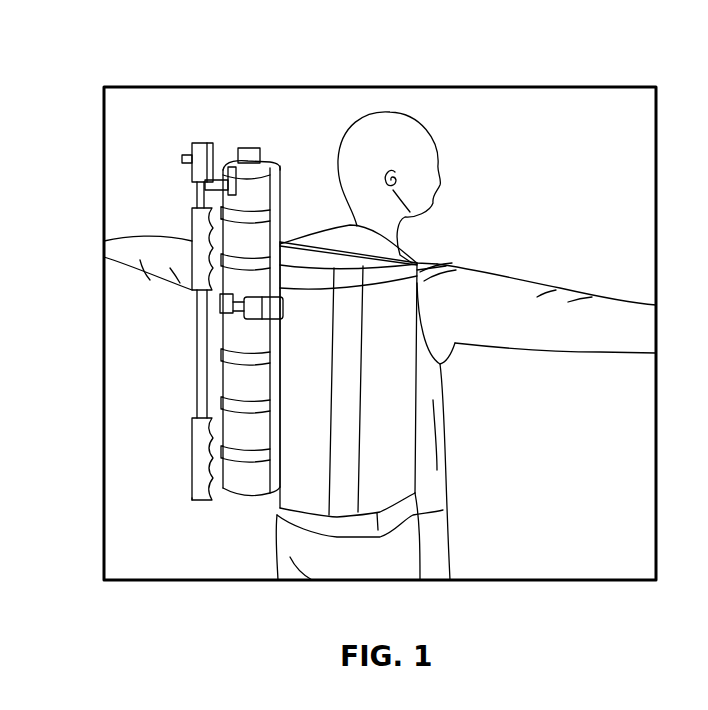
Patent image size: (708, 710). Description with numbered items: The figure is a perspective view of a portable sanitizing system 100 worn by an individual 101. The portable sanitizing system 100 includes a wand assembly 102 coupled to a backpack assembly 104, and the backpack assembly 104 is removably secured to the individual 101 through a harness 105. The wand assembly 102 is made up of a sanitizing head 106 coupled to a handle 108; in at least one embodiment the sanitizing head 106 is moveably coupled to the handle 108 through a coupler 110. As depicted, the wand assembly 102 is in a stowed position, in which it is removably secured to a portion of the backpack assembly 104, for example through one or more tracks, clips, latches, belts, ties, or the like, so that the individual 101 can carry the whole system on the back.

The portable sanitizing system 100 is at (145, 352).
The individual 101 is at (519, 264).
The wand assembly 102 is at (178, 418).
The backpack assembly 104 is at (395, 438).
The harness 105 is at (443, 264).
The sanitizing head 106 is at (279, 196).
The handle 108 is at (193, 192).
The coupler 110 is at (213, 146).